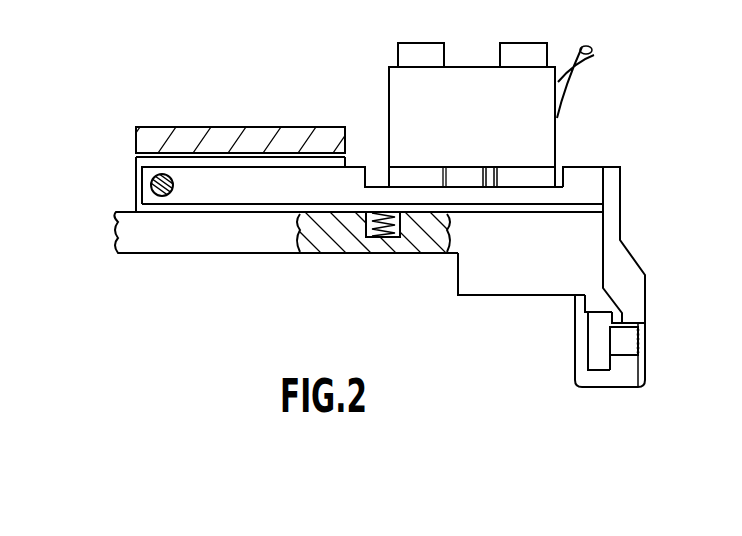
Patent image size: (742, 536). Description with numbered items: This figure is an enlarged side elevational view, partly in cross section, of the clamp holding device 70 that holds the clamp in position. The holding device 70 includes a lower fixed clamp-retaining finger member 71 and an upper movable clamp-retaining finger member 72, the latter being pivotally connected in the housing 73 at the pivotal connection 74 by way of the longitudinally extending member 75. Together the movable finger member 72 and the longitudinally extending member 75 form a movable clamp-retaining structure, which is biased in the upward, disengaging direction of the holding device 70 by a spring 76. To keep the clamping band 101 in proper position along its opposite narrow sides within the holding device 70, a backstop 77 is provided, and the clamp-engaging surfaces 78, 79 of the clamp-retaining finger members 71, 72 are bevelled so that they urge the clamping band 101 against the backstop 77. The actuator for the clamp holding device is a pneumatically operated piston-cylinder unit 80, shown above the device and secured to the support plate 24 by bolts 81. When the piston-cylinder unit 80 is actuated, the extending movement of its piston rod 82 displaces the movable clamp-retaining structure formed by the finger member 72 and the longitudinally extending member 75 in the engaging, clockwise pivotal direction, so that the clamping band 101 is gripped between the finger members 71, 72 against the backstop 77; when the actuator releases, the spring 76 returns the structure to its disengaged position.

The support plate 24 is at (240, 237).
The clamp holding device 70 is at (661, 313).
The lower fixed clamp-retaining finger member 71 is at (620, 380).
The upper movable clamp-retaining finger member 72 is at (626, 274).
The housing 73 is at (255, 128).
The pivotal connection 74 is at (152, 187).
The longitudinally extending member 75 is at (447, 197).
The spring 76 is at (376, 238).
The backstop 77 is at (623, 350).
The clamp-engaging surface 78 is at (643, 350).
The clamp-engaging surface 79 is at (587, 318).
The pneumatically operated piston-cylinder unit 80 is at (385, 82).
The bolts 81 is at (425, 50).
The piston rod 82 is at (470, 176).
The clamping band 101 is at (643, 342).